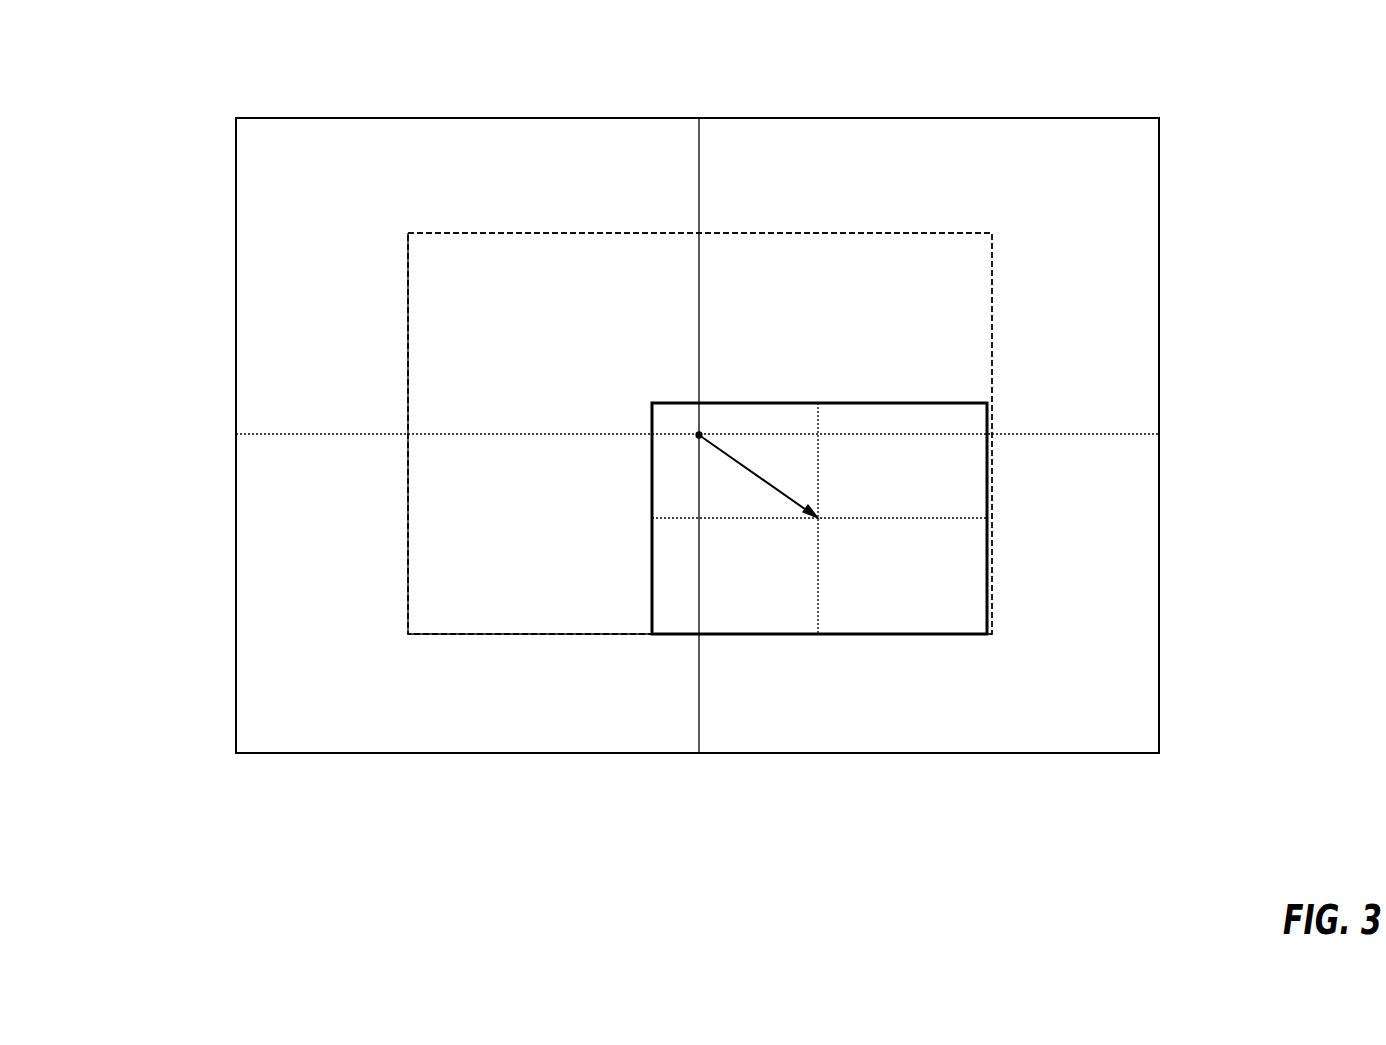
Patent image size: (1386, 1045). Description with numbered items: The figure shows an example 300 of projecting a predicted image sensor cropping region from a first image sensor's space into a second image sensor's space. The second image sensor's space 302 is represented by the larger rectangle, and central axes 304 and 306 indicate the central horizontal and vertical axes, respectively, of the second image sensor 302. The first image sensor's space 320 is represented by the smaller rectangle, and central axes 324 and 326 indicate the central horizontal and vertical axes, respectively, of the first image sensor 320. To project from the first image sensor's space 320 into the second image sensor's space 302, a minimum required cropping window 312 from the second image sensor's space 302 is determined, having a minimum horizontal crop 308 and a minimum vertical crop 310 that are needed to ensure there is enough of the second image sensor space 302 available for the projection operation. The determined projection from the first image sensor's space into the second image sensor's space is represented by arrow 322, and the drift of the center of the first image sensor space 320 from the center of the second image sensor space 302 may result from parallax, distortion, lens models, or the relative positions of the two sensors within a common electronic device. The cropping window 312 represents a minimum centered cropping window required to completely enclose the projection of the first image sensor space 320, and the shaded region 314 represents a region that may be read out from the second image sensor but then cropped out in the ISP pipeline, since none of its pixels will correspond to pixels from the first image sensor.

The example of projecting a predicted image sensor cropping region 300 is at (210, 45).
The second image sensor's space 302 is at (697, 418).
The central horizontal axis of second image sensor 304 is at (1115, 434).
The central vertical axis of second image sensor 306 is at (698, 172).
The minimum horizontal crop 308 is at (700, 651).
The minimum vertical crop 310 is at (389, 433).
The minimum required cropping window 312 is at (950, 233).
The shaded region 314 is at (538, 335).
The first image sensor's space 320 is at (819, 500).
The arrow representing the projection 322 is at (748, 471).
The central horizontal axis of first image sensor 324 is at (967, 518).
The central vertical axis of first image sensor 326 is at (818, 606).